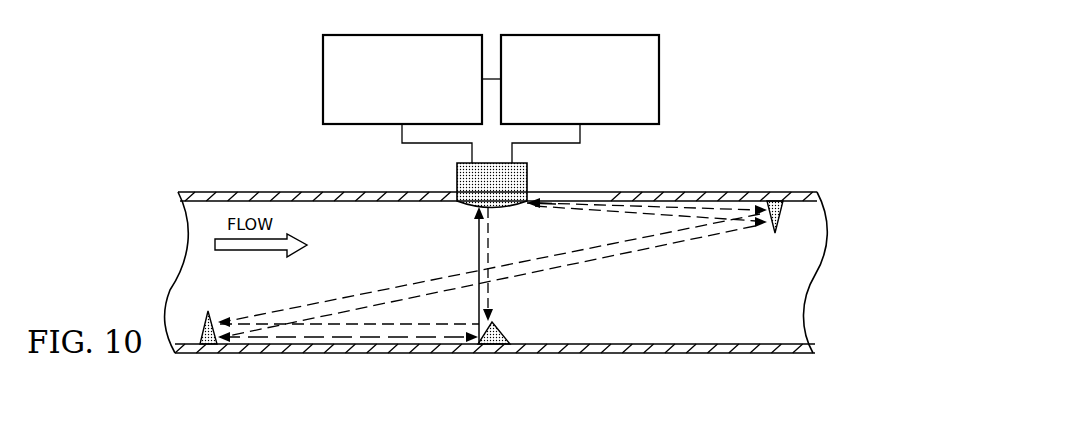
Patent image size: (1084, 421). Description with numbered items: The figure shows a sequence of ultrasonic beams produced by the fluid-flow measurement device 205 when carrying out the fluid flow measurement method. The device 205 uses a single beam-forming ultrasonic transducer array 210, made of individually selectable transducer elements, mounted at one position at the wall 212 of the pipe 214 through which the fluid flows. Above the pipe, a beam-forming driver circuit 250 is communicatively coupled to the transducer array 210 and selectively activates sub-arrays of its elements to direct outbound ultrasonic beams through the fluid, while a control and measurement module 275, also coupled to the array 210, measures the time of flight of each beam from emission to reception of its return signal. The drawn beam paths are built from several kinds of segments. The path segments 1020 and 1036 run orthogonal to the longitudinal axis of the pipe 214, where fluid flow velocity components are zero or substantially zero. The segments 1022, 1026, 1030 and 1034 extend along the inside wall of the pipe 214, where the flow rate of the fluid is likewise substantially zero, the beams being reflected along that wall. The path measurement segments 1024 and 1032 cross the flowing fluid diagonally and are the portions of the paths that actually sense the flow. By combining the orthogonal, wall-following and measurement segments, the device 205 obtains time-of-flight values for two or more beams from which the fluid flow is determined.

The fluid-flow measurement device 205 is at (120, 200).
The beam-forming ultrasonic transducer array 210 is at (457, 183).
The wall 212 is at (655, 192).
The pipe 214 is at (182, 262).
The beam-forming driver circuit 250 is at (322, 70).
The control and measurement module 275 is at (659, 70).
The path segment 1020 is at (490, 303).
The segment 1022 is at (322, 326).
The path measurement segment 1024 is at (358, 295).
The segment 1026 is at (592, 200).
The segment 1030 is at (547, 212).
The path measurement segment 1032 is at (652, 248).
The segment 1034 is at (443, 339).
The path segment 1036 is at (478, 236).